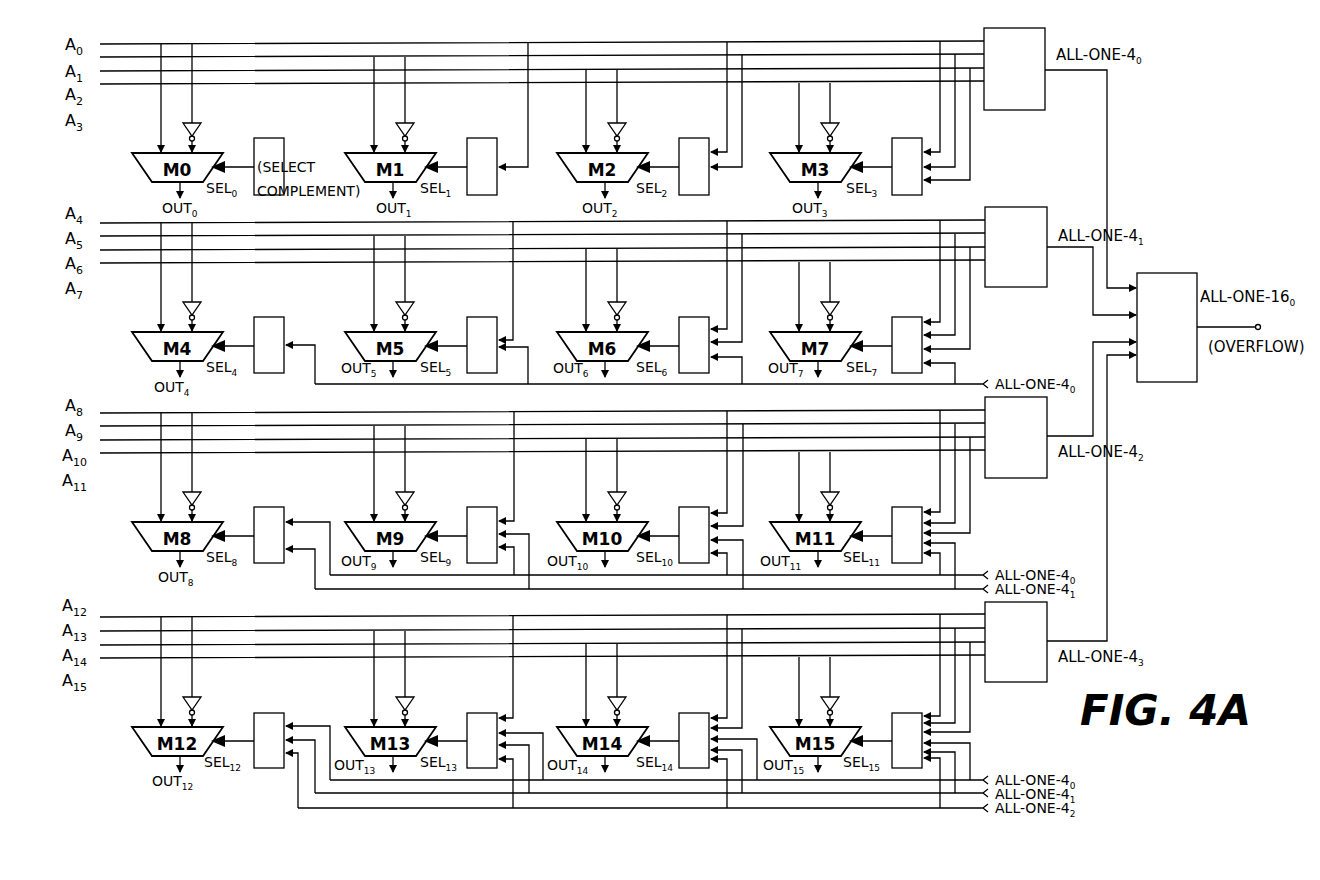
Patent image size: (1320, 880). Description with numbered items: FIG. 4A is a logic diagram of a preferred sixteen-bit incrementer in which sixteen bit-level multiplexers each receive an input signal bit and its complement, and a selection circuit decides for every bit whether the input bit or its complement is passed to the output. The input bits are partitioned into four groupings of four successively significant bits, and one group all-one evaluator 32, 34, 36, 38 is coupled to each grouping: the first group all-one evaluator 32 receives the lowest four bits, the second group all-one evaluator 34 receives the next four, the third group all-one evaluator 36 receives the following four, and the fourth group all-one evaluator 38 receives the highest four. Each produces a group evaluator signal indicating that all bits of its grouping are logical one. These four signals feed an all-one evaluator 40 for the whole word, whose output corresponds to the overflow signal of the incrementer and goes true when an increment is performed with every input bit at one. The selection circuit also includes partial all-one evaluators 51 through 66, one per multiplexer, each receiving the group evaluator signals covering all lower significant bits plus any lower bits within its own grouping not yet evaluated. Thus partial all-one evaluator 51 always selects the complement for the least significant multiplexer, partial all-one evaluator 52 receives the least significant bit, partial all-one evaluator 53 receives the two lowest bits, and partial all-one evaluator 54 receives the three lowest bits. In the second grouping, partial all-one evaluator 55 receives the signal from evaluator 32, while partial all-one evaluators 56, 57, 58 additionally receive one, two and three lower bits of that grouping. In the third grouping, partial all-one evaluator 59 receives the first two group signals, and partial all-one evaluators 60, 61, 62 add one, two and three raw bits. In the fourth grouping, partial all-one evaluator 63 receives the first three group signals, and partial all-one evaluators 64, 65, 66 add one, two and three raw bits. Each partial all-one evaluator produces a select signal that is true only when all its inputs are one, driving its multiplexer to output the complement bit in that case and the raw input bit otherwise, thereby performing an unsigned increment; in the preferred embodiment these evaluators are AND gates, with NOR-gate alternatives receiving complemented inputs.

The group all-one evaluator 32 is at (1060, 158).
The group all-one evaluator 34 is at (1060, 261).
The group all-one evaluator 36 is at (1060, 410).
The group all-one evaluator 38 is at (1060, 518).
The all-one-16 evaluator 40 is at (1199, 327).
The partial all-one evaluator 51 is at (271, 138).
The partial all-one evaluator 52 is at (484, 138).
The partial all-one evaluator 53 is at (696, 138).
The partial all-one evaluator 54 is at (909, 138).
The partial all-one evaluator 55 is at (271, 317).
The partial all-one evaluator 56 is at (484, 317).
The partial all-one evaluator 57 is at (696, 317).
The partial all-one evaluator 58 is at (909, 317).
The partial all-one evaluator 59 is at (271, 507).
The partial all-one evaluator 60 is at (484, 507).
The partial all-one evaluator 61 is at (696, 507).
The partial all-one evaluator 62 is at (909, 507).
The partial all-one evaluator 63 is at (271, 713).
The partial all-one evaluator 64 is at (484, 713).
The partial all-one evaluator 65 is at (696, 713).
The partial all-one evaluator 66 is at (909, 713).